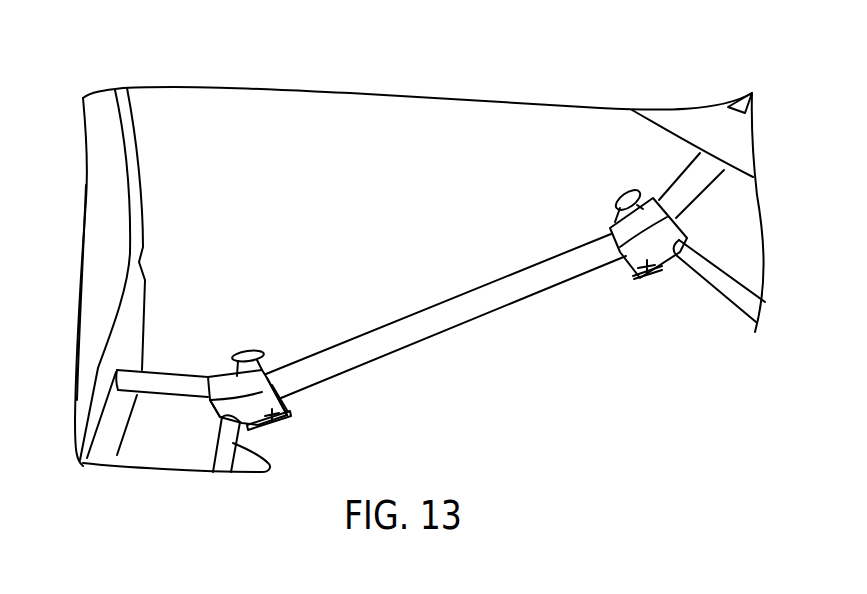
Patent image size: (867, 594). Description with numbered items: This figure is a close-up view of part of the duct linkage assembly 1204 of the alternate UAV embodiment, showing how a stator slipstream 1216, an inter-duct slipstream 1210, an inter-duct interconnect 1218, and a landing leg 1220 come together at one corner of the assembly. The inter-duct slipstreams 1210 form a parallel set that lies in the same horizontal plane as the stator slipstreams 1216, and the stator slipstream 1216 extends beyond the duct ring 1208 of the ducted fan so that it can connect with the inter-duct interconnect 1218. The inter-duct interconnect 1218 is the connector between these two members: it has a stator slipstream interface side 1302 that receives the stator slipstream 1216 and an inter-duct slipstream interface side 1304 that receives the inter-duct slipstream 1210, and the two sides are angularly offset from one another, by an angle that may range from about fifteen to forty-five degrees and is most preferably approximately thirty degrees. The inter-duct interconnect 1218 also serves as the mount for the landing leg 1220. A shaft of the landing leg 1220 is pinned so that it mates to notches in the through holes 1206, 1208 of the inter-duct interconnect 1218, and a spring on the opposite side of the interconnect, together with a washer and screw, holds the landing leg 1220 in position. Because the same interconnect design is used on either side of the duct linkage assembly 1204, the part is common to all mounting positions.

The duct linkage assembly 1204 is at (418, 130).
The through hole 1206 is at (121, 143).
The duct ring 1208 is at (96, 457).
The inter-duct slipstream 1210 is at (385, 332).
The stator slipstream 1216 is at (182, 381).
The inter-duct interconnect 1218 is at (228, 381).
The landing leg 1220 is at (238, 447).
The stator slipstream interface side 1302 is at (207, 392).
The inter-duct slipstream interface side 1304 is at (285, 394).